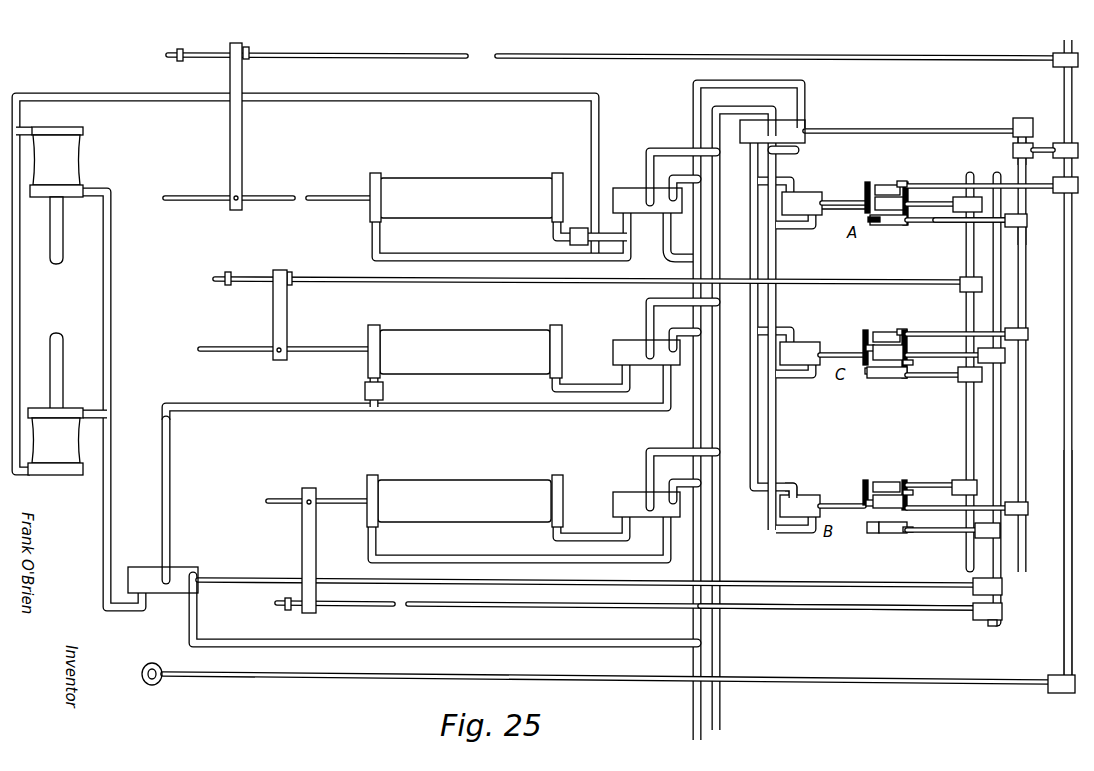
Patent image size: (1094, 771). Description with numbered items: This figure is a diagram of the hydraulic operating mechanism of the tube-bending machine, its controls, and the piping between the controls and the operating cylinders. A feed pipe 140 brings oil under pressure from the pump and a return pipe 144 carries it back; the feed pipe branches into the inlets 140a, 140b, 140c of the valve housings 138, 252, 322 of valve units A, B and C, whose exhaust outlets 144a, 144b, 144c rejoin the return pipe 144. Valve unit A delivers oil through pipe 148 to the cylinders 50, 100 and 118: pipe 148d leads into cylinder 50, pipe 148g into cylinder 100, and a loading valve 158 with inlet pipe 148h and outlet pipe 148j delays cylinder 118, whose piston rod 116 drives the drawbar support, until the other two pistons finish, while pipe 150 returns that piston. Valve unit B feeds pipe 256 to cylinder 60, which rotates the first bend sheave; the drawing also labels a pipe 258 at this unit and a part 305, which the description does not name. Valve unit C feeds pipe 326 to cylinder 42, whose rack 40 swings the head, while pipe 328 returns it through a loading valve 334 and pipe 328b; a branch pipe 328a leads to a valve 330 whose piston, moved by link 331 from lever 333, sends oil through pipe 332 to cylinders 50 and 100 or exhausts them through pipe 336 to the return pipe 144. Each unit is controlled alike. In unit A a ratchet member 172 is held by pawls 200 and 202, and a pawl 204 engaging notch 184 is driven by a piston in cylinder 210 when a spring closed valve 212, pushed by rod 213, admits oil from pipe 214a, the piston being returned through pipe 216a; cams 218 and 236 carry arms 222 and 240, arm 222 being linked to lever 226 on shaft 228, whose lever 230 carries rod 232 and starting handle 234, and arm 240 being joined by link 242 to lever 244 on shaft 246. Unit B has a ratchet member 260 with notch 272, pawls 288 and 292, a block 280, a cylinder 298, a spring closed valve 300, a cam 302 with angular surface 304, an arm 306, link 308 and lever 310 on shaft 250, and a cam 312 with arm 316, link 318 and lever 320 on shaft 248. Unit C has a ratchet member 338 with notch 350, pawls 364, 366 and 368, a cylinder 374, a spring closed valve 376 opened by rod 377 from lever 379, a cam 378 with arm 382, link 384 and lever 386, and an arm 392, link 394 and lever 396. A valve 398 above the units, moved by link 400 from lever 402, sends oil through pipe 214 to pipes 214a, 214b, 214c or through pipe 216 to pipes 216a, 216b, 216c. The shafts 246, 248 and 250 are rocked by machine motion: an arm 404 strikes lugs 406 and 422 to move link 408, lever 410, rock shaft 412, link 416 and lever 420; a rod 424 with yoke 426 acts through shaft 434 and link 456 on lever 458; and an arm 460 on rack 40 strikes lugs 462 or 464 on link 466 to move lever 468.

The piston rod 40 is at (340, 347).
The cylinder 42 is at (458, 338).
The solenoid 50 is at (72, 156).
The cylinder 60 is at (455, 490).
The solenoid 100 is at (72, 440).
The piston rod 116 is at (352, 197).
The cylinder 118 is at (452, 186).
The valve block 138 is at (627, 196).
The supply pipe 140 is at (777, 110).
The branch pipe 140a is at (646, 160).
The branch pipe 140b is at (646, 480).
The branch pipe 140c is at (646, 320).
The return pipe 144 is at (805, 96).
The branch pipe 144a is at (672, 175).
The branch pipe 144b is at (676, 470).
The branch pipe 144c is at (675, 330).
The pipe 148 is at (680, 258).
The pipe 148d is at (25, 128).
The pipe 148g is at (28, 480).
The pipe 148h is at (592, 260).
The pipe 148j is at (556, 237).
The pipe 150 is at (630, 250).
The fitting 158 is at (576, 228).
The valve member 172 is at (910, 197).
The coupling 184 is at (915, 209).
The plate 200 is at (862, 185).
The rod 202 is at (918, 223).
The rod 204 is at (850, 211).
The valve body 210 is at (808, 193).
The valve stem 212 is at (826, 201).
The stub 213 is at (950, 199).
The pipe 214 is at (752, 160).
The branch pipe 214a is at (790, 177).
The branch pipe 214b is at (773, 488).
The branch pipe 214c is at (787, 327).
The pipe 216 is at (798, 147).
The branch pipe 216a is at (798, 230).
The branch pipe 216b is at (792, 535).
The branch pipe 216c is at (798, 379).
The plate 218 is at (867, 182).
The rod 222 is at (892, 184).
The coupling 226 is at (1027, 220).
The pipe 228 is at (1062, 655).
The coupling 230 is at (1055, 693).
The rod 232 is at (322, 681).
The handle 234 is at (155, 686).
The stub 236 is at (875, 224).
The block 240 is at (888, 226).
The rod 242 is at (960, 224).
The pipe 244 is at (1027, 232).
The pipe 246 is at (1022, 423).
The pipe 248 is at (993, 420).
The pipe 250 is at (967, 445).
The valve block 252 is at (615, 500).
The pipe 256 is at (621, 534).
The pipe 258 is at (662, 545).
The stub 260 is at (952, 490).
The rod 272 is at (929, 495).
The block 280 is at (910, 516).
The plate 288 is at (863, 484).
The stub 292 is at (863, 503).
The pipe 298 is at (807, 484).
The valve body 300 is at (813, 495).
The valve stem 302 is at (870, 481).
The rod 304 is at (957, 512).
The rod 305 is at (1027, 507).
The block 306 is at (884, 481).
The plate 308 is at (867, 372).
The coupling 310 is at (978, 487).
The block 312 is at (866, 534).
The block 316 is at (883, 534).
The stub 318 is at (912, 534).
The coupling 320 is at (1002, 532).
The valve block 322 is at (618, 348).
The pipe 326 is at (621, 386).
The pipe 328 is at (607, 412).
The pipe 328a is at (172, 512).
The pipe 328b is at (365, 385).
The valve block 330 is at (140, 566).
The rod 331 is at (222, 577).
The pipe 332 is at (138, 612).
The coupling 333 is at (1003, 588).
The fitting 334 is at (370, 398).
The pipe 336 is at (228, 638).
The block 338 is at (900, 346).
The stub 350 is at (913, 362).
The plate 364 is at (863, 330).
The rod 366 is at (935, 333).
The stub 368 is at (864, 346).
The valve body 374 is at (810, 341).
The valve stem 376 is at (824, 359).
The rod 377 is at (942, 345).
The block 378 is at (877, 331).
The coupling 379 is at (1005, 358).
The stub 382 is at (893, 329).
The plate 384 is at (906, 332).
The coupling 386 is at (1027, 332).
The block 392 is at (882, 379).
The rod 394 is at (920, 378).
The coupling 396 is at (963, 383).
The valve block 398 is at (740, 128).
The rod 400 is at (908, 130).
The coupling 402 is at (1030, 120).
The bar 404 is at (243, 142).
The pin 406 is at (180, 48).
The rod 408 is at (226, 52).
The coupling 410 is at (1062, 53).
The pipe 412 is at (1063, 87).
The coupling 416 is at (1053, 183).
The pipe 420 is at (1017, 147).
The collar 422 is at (250, 48).
The bar 424 is at (302, 555).
The pin 426 is at (291, 609).
The rod 434 is at (385, 606).
The rod 456 is at (933, 611).
The coupling 458 is at (1003, 614).
The bar 460 is at (288, 303).
The collar 462 is at (291, 270).
The pin 464 is at (228, 271).
The rod 466 is at (350, 278).
The coupling 468 is at (982, 284).